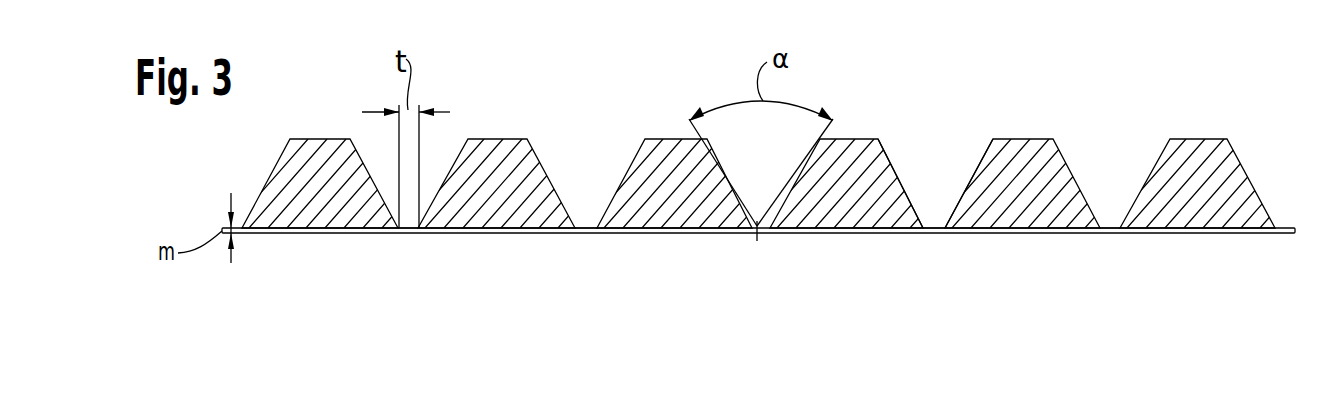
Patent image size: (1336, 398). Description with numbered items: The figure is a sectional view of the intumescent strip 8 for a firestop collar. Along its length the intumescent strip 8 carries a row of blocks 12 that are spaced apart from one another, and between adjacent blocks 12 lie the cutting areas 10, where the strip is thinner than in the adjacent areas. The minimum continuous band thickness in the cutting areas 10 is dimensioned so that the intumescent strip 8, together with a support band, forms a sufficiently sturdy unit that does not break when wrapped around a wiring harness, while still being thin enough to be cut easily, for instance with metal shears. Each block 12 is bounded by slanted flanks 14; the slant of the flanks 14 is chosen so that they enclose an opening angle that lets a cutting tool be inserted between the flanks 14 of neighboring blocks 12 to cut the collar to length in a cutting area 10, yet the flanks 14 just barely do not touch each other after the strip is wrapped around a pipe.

The intumescent strip 8 is at (1258, 90).
The cutting areas 10 is at (583, 250).
The blocks 12 is at (1023, 122).
The flanks 14 is at (889, 184).